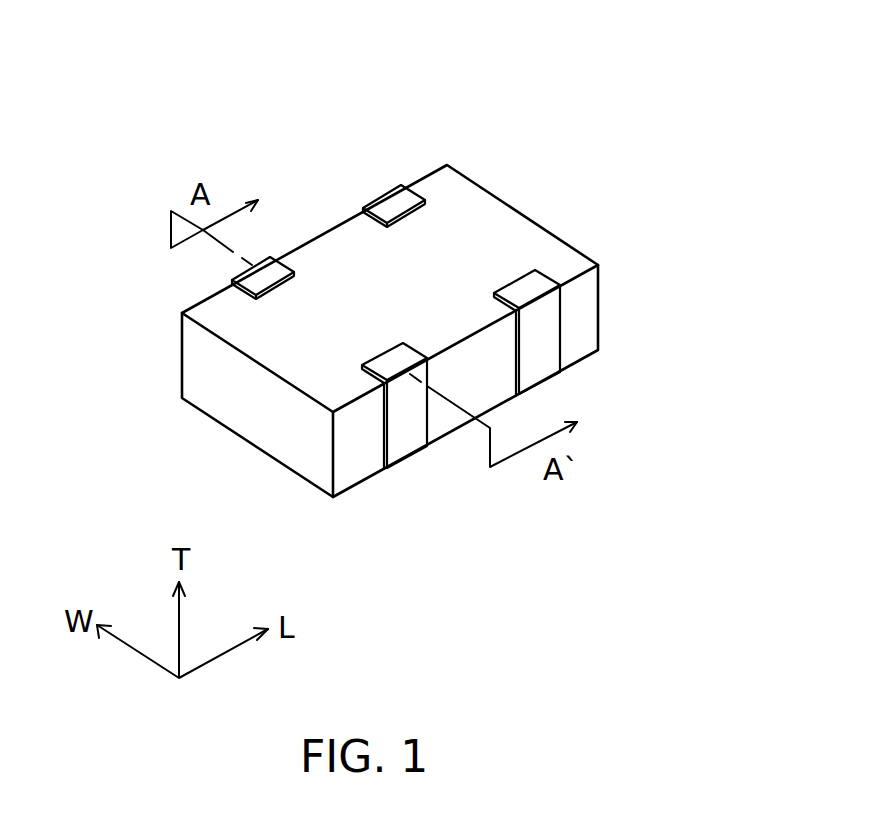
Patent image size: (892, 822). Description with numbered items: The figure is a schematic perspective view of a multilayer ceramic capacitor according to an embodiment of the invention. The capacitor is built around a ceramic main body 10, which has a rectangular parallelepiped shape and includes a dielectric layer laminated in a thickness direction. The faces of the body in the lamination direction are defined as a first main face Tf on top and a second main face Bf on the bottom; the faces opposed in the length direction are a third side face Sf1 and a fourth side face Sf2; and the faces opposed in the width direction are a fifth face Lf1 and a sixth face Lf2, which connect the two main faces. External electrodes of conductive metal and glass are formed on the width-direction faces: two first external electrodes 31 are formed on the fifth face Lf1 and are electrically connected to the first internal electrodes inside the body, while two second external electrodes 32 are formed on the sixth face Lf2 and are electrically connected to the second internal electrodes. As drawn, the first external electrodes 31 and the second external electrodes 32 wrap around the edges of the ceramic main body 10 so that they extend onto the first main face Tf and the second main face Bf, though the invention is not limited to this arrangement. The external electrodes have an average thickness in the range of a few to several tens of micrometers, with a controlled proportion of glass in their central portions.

The ceramic main body 10 is at (408, 146).
The first external electrodes 31 is at (533, 342).
The second external electrodes 32 is at (363, 205).
The fifth face Lf1 is at (582, 337).
The sixth face Lf2 is at (420, 178).
The third side face Sf1 is at (223, 415).
The fourth side face Sf2 is at (540, 224).
The first main face Tf is at (220, 318).
The second main face Bf is at (355, 487).